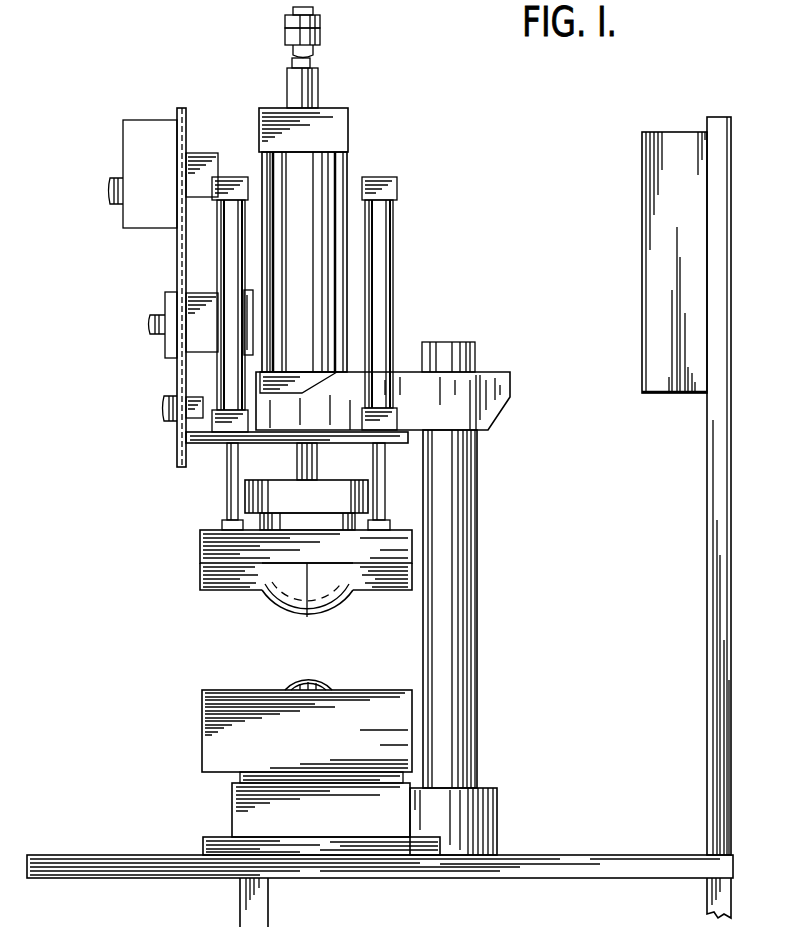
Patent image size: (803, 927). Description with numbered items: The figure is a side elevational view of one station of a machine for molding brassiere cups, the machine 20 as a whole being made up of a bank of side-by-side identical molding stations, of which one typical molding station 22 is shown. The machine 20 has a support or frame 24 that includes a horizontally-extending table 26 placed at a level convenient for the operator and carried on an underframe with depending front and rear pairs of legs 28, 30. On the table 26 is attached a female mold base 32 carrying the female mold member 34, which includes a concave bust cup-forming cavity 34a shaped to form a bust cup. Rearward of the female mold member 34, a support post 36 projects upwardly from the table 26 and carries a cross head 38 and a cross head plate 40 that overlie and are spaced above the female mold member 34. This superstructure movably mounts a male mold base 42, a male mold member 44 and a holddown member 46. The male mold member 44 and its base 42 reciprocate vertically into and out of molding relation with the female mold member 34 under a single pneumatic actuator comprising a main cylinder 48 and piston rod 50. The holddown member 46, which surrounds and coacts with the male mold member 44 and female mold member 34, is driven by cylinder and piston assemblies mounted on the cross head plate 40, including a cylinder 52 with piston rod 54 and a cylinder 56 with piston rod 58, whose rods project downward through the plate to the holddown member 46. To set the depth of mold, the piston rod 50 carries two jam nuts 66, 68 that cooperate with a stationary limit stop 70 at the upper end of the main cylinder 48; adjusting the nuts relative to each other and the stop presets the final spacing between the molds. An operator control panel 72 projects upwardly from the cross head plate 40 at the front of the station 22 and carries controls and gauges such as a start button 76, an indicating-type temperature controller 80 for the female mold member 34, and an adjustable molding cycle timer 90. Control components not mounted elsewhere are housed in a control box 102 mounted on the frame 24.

The molding machine 20 is at (740, 471).
The molding station 22 is at (408, 149).
The support or frame 24 is at (729, 663).
The table 26 is at (598, 858).
The front legs 28 is at (265, 900).
The rear legs 30 is at (726, 903).
The female mold base 32 is at (235, 803).
The female mold member 34 is at (212, 742).
The bust cup-forming cavity 34a is at (318, 686).
The support post 36 is at (465, 521).
The cross head 38 is at (490, 421).
The cross head plate 40 is at (205, 446).
The male mold base 42 is at (290, 490).
The male mold member 44 is at (276, 602).
The holddown member 46 is at (205, 548).
The main cylinder 48 is at (310, 261).
The piston rod 50 is at (316, 462).
The cylinder 52 is at (385, 274).
The piston rod 54 is at (385, 498).
The cylinder 56 is at (227, 243).
The piston rod 58 is at (229, 494).
The jam nut 66 is at (321, 35).
The jam nut 68 is at (322, 18).
The limit stop 70 is at (318, 88).
The operator control panel 72 is at (177, 243).
The start button 76 is at (162, 408).
The temperature controller 80 is at (145, 128).
The molding cycle timer 90 is at (167, 338).
The control box 102 is at (652, 248).